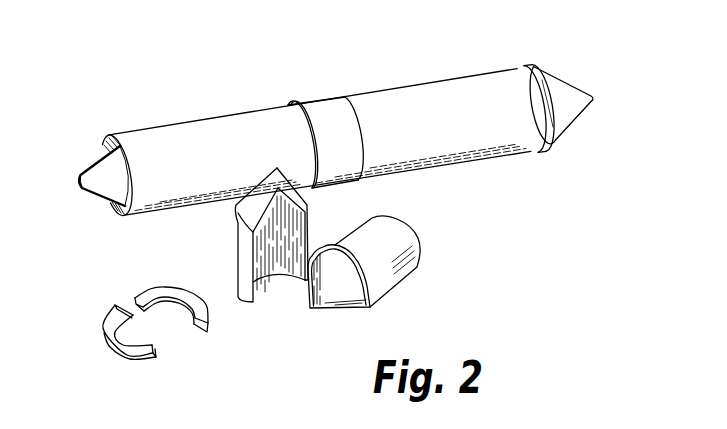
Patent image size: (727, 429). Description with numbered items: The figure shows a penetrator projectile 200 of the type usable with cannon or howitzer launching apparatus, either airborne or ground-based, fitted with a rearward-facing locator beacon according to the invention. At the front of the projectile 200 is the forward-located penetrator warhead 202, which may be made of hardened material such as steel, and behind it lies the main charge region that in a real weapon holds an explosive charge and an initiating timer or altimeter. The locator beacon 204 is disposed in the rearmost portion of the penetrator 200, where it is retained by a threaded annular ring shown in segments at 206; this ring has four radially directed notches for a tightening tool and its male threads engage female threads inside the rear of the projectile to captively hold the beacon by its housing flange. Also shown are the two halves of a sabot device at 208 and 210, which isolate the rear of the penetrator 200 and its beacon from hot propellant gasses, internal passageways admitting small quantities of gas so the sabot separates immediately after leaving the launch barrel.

The penetrator projectile 200 is at (490, 155).
The penetrator warhead 202 is at (560, 77).
The locator beacon 204 is at (98, 173).
The threaded annular ring 206 is at (132, 362).
The sabot half 208 is at (393, 246).
The sabot half 210 is at (307, 203).